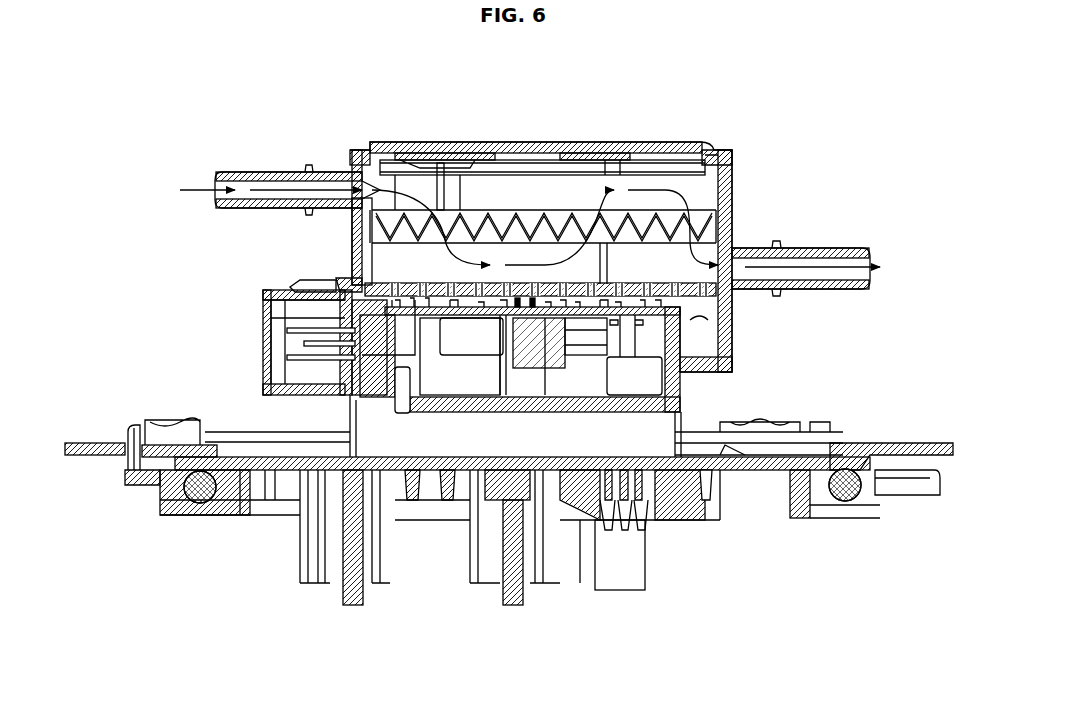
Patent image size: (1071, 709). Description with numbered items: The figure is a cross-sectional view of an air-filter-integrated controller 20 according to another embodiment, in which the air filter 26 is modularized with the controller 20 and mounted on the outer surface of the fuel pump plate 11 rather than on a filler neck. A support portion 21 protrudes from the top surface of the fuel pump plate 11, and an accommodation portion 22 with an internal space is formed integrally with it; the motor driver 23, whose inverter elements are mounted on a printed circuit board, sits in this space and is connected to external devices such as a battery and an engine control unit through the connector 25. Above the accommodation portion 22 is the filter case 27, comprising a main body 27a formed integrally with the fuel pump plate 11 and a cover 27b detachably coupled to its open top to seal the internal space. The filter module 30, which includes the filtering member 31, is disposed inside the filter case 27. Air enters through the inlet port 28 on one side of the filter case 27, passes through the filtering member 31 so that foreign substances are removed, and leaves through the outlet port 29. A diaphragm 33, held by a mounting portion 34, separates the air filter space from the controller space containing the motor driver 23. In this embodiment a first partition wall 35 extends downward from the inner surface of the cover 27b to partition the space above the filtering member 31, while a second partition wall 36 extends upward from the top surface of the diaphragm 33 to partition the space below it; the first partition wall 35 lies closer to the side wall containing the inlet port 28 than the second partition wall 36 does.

The fuel pump plate 11 is at (803, 460).
The controller 20 is at (751, 170).
The support portion 21 is at (660, 432).
The accommodation portion 22 is at (680, 333).
The motor driver 23 is at (467, 322).
The connector 25 is at (262, 292).
The air filter 26 is at (166, 140).
The filter case 27 is at (361, 217).
The main body 27a is at (726, 213).
The cover 27b is at (506, 140).
The inlet port 28 is at (244, 172).
The outlet port 29 is at (868, 252).
The filter module 30 is at (684, 205).
The filtering member 31 is at (543, 214).
The diaphragm 33 is at (352, 277).
The mounting portion 34 is at (350, 302).
The first partition wall 35 is at (438, 160).
The second partition wall 36 is at (630, 158).